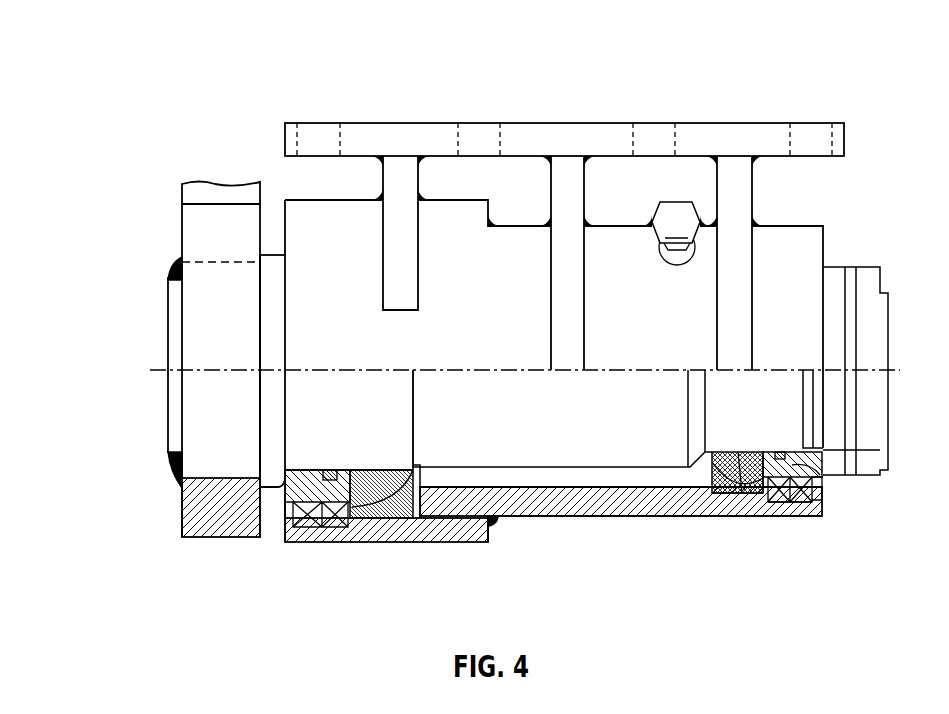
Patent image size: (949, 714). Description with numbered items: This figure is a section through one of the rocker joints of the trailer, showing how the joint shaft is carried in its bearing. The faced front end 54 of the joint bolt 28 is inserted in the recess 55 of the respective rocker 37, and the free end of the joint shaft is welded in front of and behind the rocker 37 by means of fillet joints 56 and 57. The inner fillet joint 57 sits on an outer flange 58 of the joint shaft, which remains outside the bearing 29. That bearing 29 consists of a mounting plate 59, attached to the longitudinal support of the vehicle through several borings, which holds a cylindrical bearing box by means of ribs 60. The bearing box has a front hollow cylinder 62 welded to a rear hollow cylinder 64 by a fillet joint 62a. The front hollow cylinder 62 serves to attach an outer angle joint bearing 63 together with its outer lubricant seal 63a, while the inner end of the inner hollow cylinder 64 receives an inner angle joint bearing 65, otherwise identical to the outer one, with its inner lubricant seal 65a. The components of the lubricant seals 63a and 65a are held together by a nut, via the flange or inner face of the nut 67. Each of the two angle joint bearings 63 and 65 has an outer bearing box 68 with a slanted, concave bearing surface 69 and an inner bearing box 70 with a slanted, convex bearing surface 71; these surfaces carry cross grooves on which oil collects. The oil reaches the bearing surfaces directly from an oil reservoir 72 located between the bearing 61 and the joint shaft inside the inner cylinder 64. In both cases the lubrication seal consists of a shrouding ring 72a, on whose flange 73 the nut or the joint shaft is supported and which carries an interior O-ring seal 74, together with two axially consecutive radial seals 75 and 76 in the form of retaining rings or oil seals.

The joint bolt 28 is at (154, 404).
The bearing 29 is at (578, 112).
The mounting plate 59 is at (413, 135).
The ribs 60 is at (743, 190).
The bearing 61 is at (802, 243).
The nut 67 is at (875, 255).
The faced front end 54 is at (175, 448).
The rocker 37 is at (207, 528).
The recess 55 is at (182, 520).
The fillet joint 56 is at (178, 262).
The fillet joint 57 is at (268, 250).
The outer flange 58 is at (276, 270).
The hollow cylinder 62 is at (420, 530).
The fillet joint 62a is at (493, 520).
The outer angle joint bearing 63 is at (350, 542).
The outer lubricant seal 63a is at (272, 540).
The hollow cylinder 64 is at (637, 508).
The oil reservoir 72 is at (584, 477).
The inner angle joint bearing 65 is at (711, 522).
The inner bearing box 70 is at (730, 452).
The convex bearing surface 71 is at (746, 455).
The O-ring seal 74 is at (779, 452).
The inner lubricant seal 65a is at (826, 497).
The shrouding ring 72a is at (794, 466).
The flange 73 is at (815, 500).
The radial seal 75 is at (800, 505).
The radial seal 76 is at (790, 510).
The outer bearing box 68 is at (735, 492).
The concave bearing surface 69 is at (761, 500).